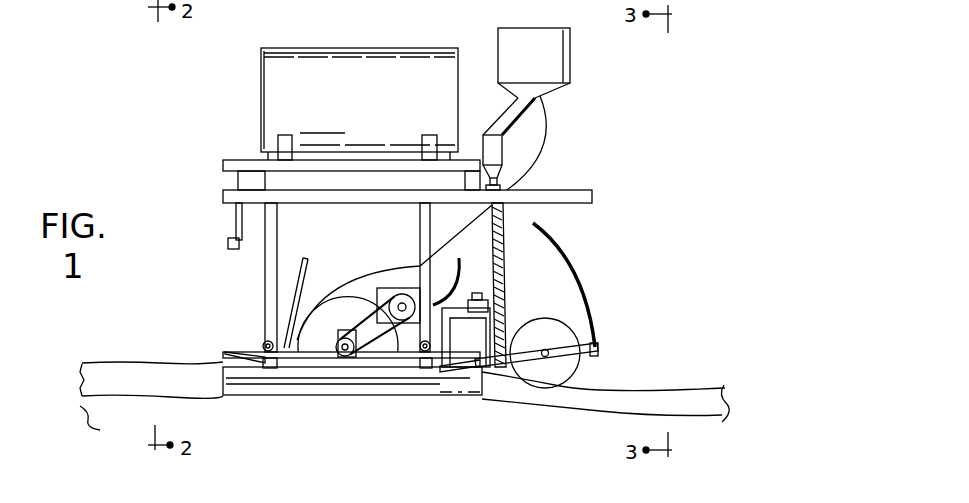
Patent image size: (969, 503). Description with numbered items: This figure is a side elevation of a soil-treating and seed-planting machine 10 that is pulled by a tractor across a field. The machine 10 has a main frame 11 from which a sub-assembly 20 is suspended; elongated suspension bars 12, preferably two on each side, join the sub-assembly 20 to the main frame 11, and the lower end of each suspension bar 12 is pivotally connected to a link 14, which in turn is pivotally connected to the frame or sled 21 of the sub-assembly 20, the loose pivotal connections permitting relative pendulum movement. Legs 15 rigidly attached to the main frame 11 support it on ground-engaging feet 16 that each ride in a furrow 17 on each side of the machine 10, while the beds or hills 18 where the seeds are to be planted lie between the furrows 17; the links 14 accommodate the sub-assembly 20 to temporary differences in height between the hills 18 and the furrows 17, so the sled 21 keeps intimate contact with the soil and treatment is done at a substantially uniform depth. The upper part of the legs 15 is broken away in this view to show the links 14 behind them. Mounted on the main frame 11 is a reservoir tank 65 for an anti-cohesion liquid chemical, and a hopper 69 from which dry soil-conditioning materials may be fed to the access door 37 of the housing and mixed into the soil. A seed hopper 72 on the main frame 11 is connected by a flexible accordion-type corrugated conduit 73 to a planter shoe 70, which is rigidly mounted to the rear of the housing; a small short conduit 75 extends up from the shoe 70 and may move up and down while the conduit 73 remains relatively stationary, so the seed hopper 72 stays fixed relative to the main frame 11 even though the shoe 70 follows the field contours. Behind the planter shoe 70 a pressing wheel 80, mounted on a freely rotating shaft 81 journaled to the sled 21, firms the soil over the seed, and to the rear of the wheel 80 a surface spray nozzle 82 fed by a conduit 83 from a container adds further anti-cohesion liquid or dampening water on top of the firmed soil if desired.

The machine 10 is at (566, 147).
The main frame 11 is at (560, 190).
The suspension bars 12 is at (277, 248).
The link 14 is at (263, 345).
The legs 15 is at (255, 360).
The ground-engaging feet 16 is at (266, 388).
The furrow 17 is at (187, 392).
The beds or hills 18 is at (148, 360).
The sub-assembly 20 is at (369, 271).
The sled 21 is at (323, 376).
The access door 37 is at (302, 318).
The reservoir tank 65 is at (372, 104).
The hopper 69 is at (547, 67).
The planter shoe 70 is at (489, 387).
The seed hopper 72 is at (501, 148).
The flexible accordion-type corrugated conduit 73 is at (502, 256).
The small short conduit 75 is at (498, 340).
The pressing wheel 80 is at (560, 348).
The freely rotating shaft 81 is at (549, 358).
The surface spray nozzle 82 is at (596, 358).
The conduit 83 is at (584, 306).